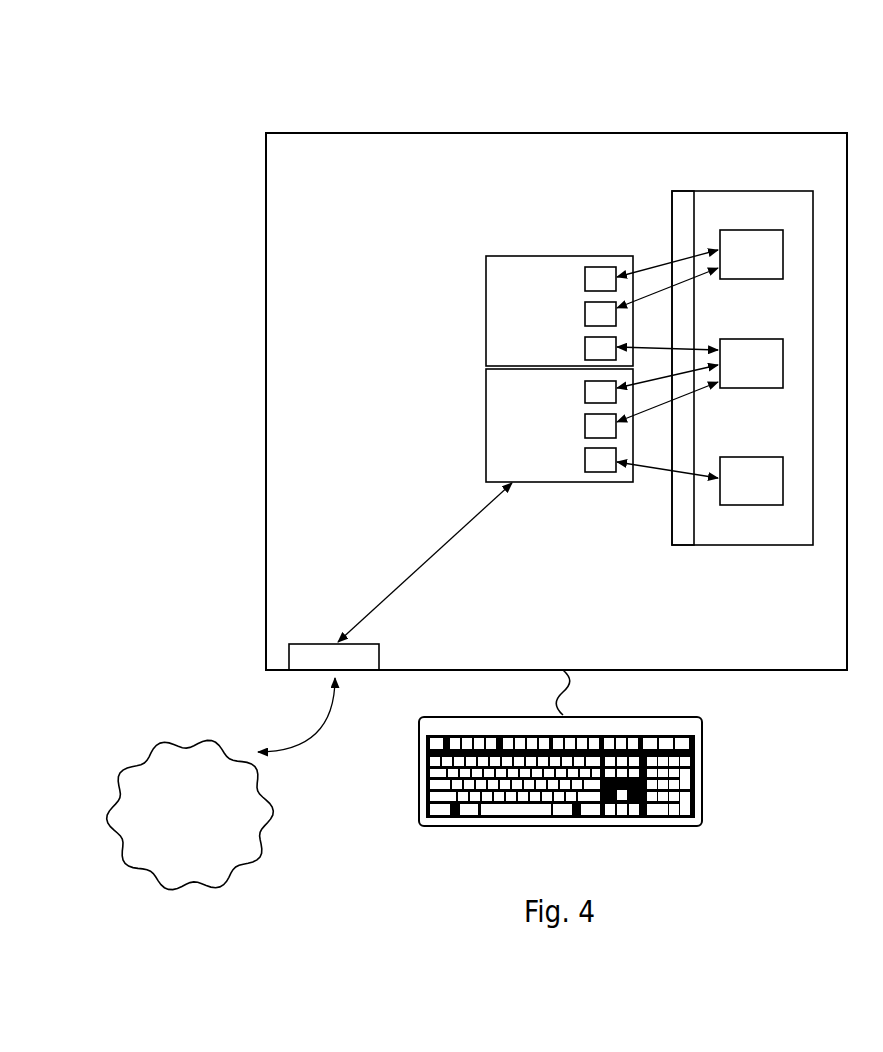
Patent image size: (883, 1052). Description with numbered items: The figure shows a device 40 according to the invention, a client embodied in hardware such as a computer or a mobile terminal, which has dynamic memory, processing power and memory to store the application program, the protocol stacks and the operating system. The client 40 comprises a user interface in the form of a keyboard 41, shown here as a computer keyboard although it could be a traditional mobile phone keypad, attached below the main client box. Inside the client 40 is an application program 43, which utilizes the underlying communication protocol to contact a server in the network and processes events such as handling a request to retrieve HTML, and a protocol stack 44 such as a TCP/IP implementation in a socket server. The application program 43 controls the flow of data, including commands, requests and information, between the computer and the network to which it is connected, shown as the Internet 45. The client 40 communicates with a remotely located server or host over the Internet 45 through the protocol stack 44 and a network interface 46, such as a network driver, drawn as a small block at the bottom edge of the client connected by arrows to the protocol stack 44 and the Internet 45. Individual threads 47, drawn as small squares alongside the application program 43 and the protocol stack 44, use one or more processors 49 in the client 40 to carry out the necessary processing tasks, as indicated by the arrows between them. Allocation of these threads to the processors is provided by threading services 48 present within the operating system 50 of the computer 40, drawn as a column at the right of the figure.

The device 40 is at (542, 112).
The keyboard 41 is at (703, 765).
The application program 43 is at (559, 311).
The protocol stack 44 is at (559, 425).
The Internet 45 is at (190, 814).
The network interface 46 is at (325, 642).
The threads 47 is at (585, 345).
The threading services 48 is at (682, 190).
The processors 49 is at (751, 367).
The operating system 50 is at (760, 190).